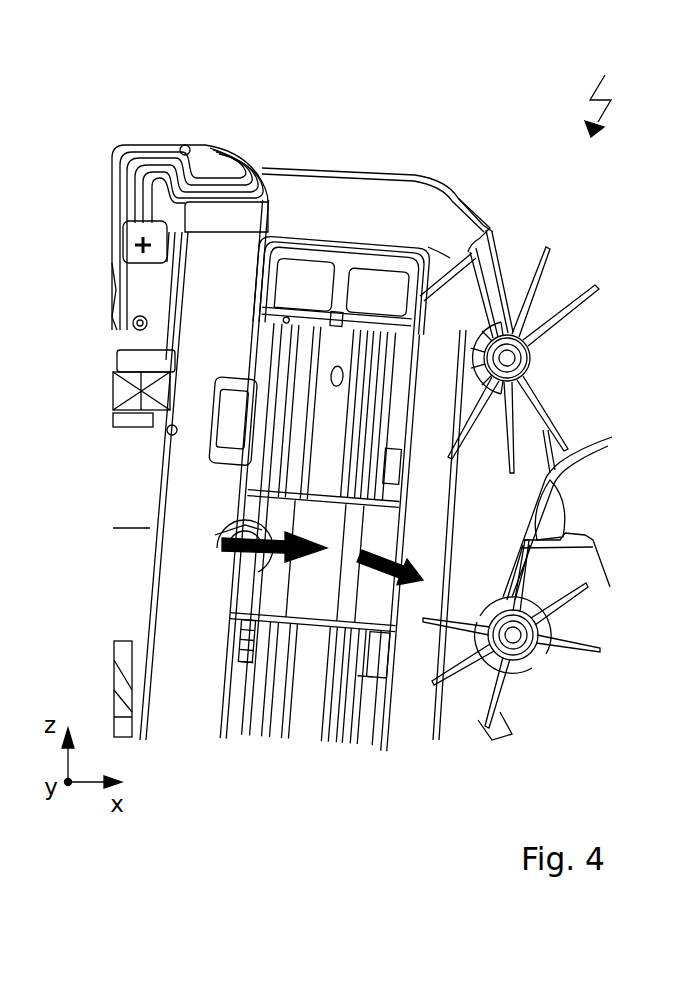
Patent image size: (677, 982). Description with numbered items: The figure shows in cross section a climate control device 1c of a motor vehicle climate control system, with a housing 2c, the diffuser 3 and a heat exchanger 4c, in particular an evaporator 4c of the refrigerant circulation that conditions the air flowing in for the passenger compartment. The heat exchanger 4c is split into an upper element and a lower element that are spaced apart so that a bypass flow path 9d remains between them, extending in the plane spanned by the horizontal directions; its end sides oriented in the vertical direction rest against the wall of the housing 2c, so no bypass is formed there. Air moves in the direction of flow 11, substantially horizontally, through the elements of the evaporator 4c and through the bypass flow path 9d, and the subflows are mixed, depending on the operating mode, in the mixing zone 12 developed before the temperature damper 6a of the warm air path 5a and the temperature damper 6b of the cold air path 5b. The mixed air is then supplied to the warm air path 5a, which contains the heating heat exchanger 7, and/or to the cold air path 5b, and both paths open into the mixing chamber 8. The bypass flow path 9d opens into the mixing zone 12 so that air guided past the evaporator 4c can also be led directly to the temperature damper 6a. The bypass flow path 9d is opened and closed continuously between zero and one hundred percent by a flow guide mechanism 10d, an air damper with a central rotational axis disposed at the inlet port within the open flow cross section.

The climate control device 1c is at (603, 93).
The housing 2c is at (453, 197).
The diffuser 3 is at (121, 593).
The heat exchanger 4c is at (310, 340).
The warm air path 5a is at (570, 693).
The cold air path 5b is at (567, 361).
The temperature damper 6a is at (515, 634).
The temperature damper 6b is at (512, 348).
The heating heat exchanger 7 is at (590, 496).
The mixing chamber 8 is at (628, 280).
The bypass flow path 9d is at (307, 595).
The flow guide mechanism 10d is at (243, 524).
The direction of flow 11 is at (368, 547).
The mixing zone 12 is at (471, 517).